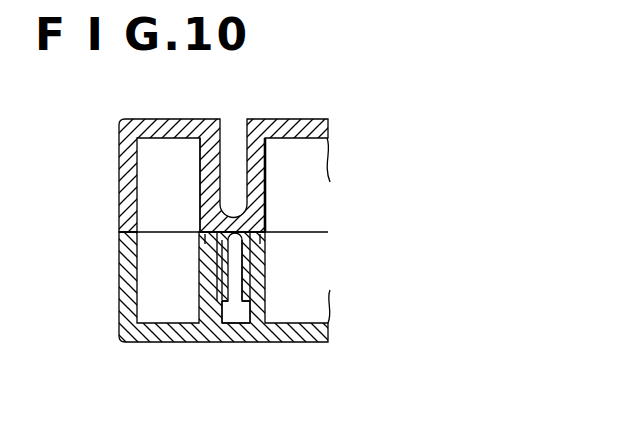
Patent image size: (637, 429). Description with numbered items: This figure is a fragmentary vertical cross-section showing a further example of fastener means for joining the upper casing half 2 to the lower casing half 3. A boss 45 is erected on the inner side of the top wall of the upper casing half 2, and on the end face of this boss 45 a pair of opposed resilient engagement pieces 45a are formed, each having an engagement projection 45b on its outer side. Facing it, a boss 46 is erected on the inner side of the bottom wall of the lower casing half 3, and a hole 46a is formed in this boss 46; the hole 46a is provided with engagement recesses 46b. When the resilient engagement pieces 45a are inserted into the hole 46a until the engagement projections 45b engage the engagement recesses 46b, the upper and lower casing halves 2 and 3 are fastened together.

The upper casing half 2 is at (283, 130).
The lower casing half 3 is at (320, 345).
The boss 45 is at (254, 173).
The resilient engagement pieces 45a is at (212, 338).
The engagement projections 45b is at (204, 259).
The boss 46 is at (266, 301).
The hole 46a is at (232, 326).
The engagement recesses 46b is at (207, 243).